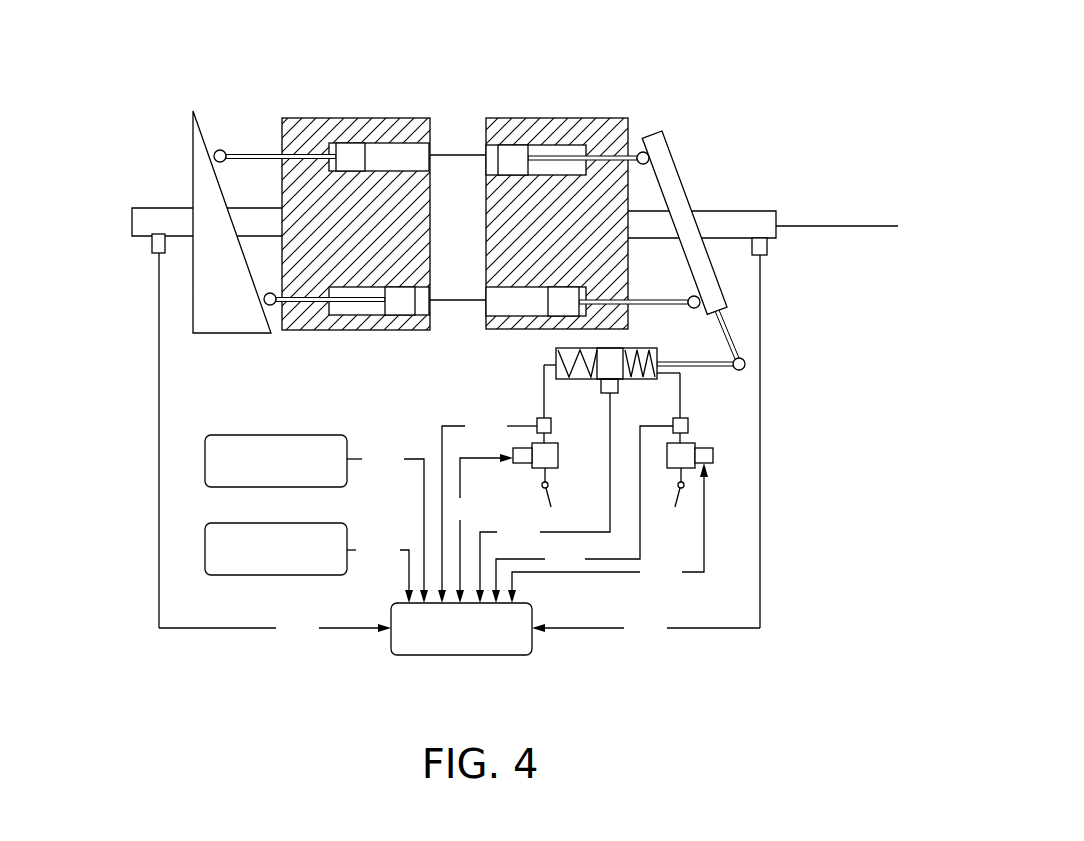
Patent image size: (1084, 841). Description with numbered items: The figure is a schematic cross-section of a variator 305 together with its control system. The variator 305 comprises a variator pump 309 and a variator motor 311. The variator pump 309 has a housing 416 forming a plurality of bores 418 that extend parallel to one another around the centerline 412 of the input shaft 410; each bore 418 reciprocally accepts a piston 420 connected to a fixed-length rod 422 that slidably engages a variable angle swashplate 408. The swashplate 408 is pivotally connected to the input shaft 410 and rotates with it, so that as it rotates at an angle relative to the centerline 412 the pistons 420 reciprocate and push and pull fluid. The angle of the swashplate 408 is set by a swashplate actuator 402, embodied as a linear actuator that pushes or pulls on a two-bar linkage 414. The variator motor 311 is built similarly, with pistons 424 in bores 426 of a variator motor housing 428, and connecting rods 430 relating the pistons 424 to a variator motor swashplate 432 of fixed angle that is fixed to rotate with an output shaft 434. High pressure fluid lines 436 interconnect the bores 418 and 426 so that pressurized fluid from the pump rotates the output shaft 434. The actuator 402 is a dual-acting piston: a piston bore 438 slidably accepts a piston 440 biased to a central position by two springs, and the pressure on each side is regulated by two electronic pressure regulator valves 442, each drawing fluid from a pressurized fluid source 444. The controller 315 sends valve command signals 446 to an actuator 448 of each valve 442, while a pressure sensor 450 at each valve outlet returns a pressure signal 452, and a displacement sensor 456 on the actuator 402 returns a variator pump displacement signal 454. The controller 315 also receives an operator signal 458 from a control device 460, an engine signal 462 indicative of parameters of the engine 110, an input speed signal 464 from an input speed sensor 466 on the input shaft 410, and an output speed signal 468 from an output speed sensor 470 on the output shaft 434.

The variator 305 is at (768, 100).
The variator motor 311 is at (442, 88).
The variator pump 309 is at (727, 88).
The connecting rods 430 is at (256, 150).
The output shaft 434 is at (141, 210).
The bores 418 is at (548, 150).
The input shaft 410 is at (713, 220).
The centerline 412 is at (823, 225).
The pistons 424 is at (397, 292).
The high pressure fluid lines 436 is at (453, 298).
The piston 420 is at (562, 292).
The output speed sensor 470 is at (152, 244).
The rod 422 is at (650, 300).
The input speed sensor 466 is at (764, 253).
The swashplate 408 is at (707, 273).
The variator motor swashplate 432 is at (228, 333).
The bore 426 is at (360, 316).
The variator motor housing 428 is at (386, 320).
The housing 416 is at (528, 331).
The piston 440 is at (606, 350).
The two-bar linkage 414 is at (730, 338).
The swashplate actuator 402 is at (662, 350).
The control device 460 is at (277, 435).
The piston bore 438 is at (588, 380).
The displacement sensor 456 is at (610, 387).
The pressure sensor 450 is at (540, 418).
The pressure signal 452 is at (555, 508).
The electronic pressure regulator valves 442 is at (555, 458).
The operator signal 458 is at (387, 524).
The actuator 448 is at (521, 463).
The valve command signals 446 is at (574, 528).
The pressurized fluid source 444 is at (618, 497).
The variator pump displacement signal 454 is at (543, 498).
The engine signal 462 is at (380, 570).
The engine 110 is at (290, 575).
The output speed signal 468 is at (275, 628).
The input speed signal 464 is at (646, 628).
The controller 315 is at (487, 655).